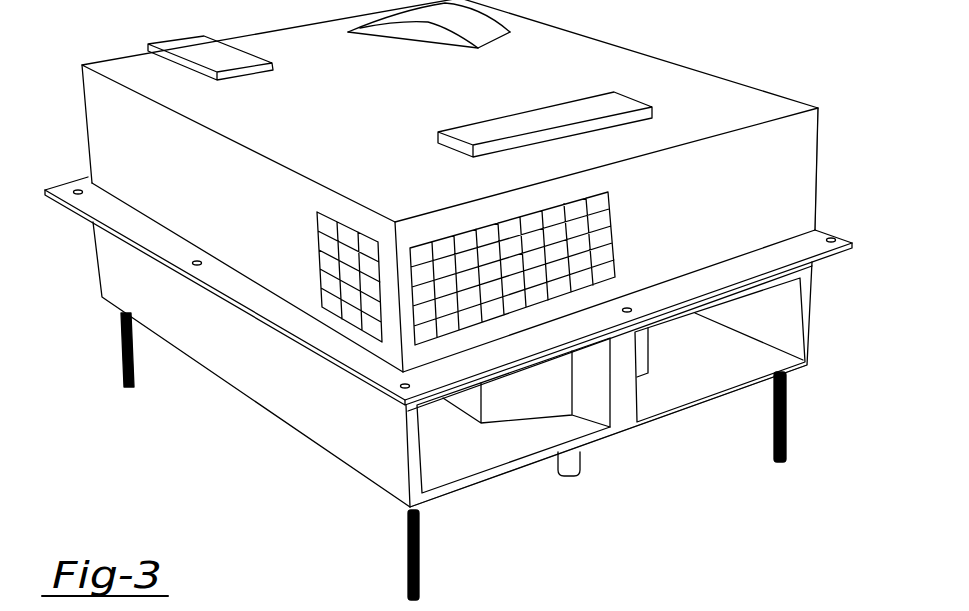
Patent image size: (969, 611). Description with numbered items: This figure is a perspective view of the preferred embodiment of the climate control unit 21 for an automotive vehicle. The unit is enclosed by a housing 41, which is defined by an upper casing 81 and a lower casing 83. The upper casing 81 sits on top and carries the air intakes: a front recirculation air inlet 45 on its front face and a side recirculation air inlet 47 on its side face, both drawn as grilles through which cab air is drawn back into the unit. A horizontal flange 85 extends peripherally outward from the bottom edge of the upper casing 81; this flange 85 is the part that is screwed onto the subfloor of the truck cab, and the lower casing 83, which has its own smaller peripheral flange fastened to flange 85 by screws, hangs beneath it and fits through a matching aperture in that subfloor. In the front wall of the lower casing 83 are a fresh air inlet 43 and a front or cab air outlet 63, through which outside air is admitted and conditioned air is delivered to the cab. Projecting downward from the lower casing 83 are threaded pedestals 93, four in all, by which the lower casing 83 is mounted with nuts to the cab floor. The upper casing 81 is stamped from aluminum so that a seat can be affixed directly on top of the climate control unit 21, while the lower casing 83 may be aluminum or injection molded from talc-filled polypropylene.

The climate control unit 21 is at (699, 491).
The housing 41 is at (837, 195).
The fresh air inlet 43 is at (470, 442).
The front recirculation air inlet 45 is at (423, 255).
The side recirculation air inlet 47 is at (327, 233).
The front or cab air outlet 63 is at (757, 320).
The upper casing 81 is at (103, 115).
The lower casing 83 is at (288, 402).
The horizontal flange 85 is at (113, 214).
The threaded pedestals 93 is at (133, 367).